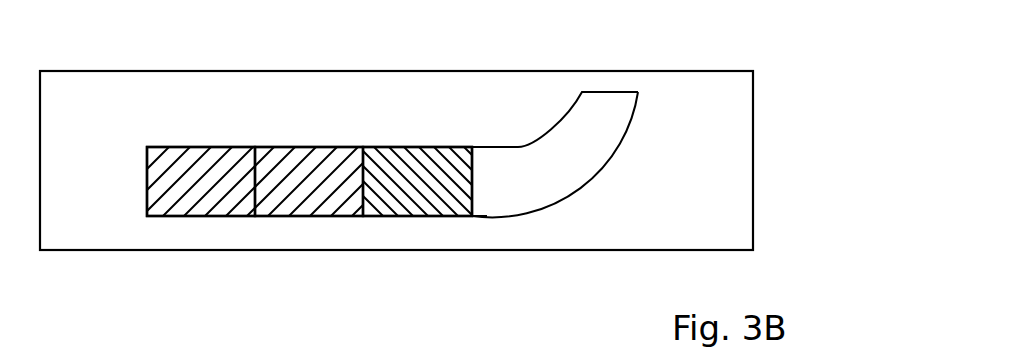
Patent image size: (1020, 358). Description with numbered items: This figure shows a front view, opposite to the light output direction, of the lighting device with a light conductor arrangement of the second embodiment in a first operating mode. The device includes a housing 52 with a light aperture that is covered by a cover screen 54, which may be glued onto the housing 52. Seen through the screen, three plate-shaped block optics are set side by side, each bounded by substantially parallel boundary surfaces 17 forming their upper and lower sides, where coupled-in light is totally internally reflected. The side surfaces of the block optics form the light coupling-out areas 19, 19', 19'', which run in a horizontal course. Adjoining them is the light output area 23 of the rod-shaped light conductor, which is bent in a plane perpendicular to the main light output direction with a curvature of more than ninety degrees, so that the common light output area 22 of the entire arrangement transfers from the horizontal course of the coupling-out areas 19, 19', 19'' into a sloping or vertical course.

The boundary surfaces 17 is at (163, 139).
The light coupling-out area 19 is at (213, 229).
The light coupling-out area 19' is at (318, 229).
The light coupling-out area 19'' is at (422, 231).
The light output area 22 is at (618, 118).
The light output area 23 is at (546, 188).
The housing 52 is at (607, 250).
The cover screen 54 is at (744, 234).